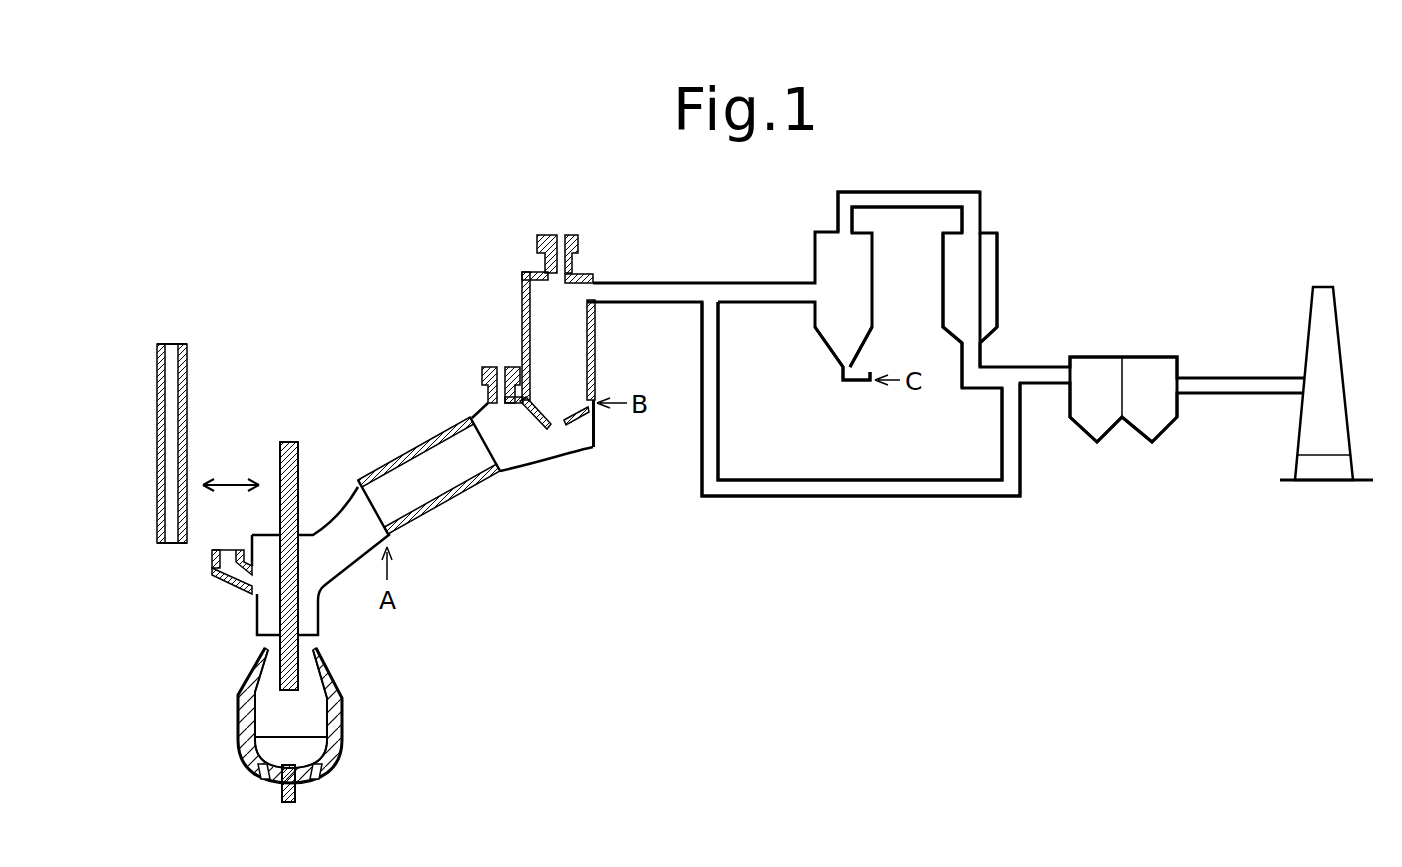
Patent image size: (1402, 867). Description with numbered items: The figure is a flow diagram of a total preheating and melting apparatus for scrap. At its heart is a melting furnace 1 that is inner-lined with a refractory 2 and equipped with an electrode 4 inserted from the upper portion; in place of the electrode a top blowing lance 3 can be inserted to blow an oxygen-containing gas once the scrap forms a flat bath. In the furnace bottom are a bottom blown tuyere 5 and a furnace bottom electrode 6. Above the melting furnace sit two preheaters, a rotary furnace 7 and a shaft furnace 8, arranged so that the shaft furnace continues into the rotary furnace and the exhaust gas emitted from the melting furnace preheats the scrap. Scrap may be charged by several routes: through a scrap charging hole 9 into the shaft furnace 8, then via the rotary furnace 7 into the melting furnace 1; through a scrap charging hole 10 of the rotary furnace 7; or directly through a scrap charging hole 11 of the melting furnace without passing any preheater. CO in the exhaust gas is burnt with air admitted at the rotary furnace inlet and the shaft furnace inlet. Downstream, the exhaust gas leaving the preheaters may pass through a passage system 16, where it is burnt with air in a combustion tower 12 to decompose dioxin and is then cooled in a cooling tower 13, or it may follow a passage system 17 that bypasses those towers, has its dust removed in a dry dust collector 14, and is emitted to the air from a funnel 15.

The melting furnace 1 is at (337, 683).
The refractory 2 is at (343, 716).
The top blowing lance 3 is at (156, 462).
The electrode 4 is at (278, 455).
The bottom blown tuyere 5 is at (252, 780).
The furnace bottom electrode 6 is at (295, 790).
The rotary furnace 7 is at (453, 508).
The shaft furnace 8 is at (522, 315).
The scrap charging hole 9 is at (578, 236).
The scrap charging hole 10 is at (482, 378).
The scrap charging hole 11 is at (223, 590).
The combustion tower 12 is at (824, 340).
The cooling tower 13 is at (985, 290).
The dry dust collector 14 is at (1108, 357).
The funnel 15 is at (1320, 328).
The passage system 16 is at (953, 190).
The passage system 17 is at (882, 498).